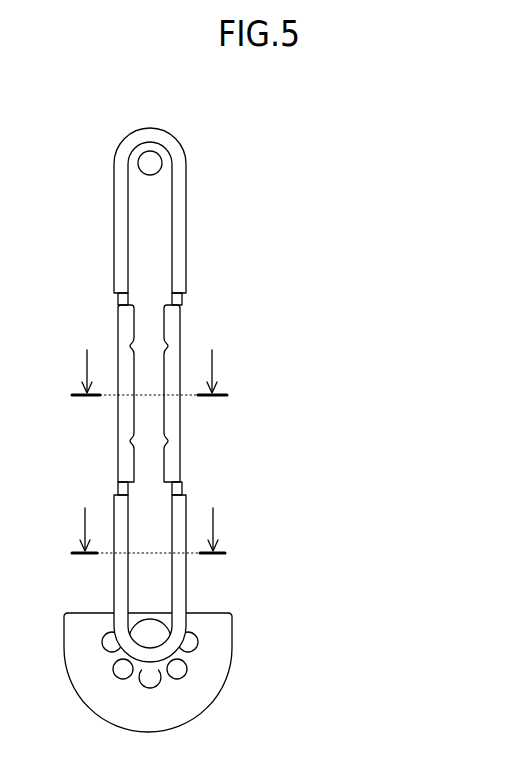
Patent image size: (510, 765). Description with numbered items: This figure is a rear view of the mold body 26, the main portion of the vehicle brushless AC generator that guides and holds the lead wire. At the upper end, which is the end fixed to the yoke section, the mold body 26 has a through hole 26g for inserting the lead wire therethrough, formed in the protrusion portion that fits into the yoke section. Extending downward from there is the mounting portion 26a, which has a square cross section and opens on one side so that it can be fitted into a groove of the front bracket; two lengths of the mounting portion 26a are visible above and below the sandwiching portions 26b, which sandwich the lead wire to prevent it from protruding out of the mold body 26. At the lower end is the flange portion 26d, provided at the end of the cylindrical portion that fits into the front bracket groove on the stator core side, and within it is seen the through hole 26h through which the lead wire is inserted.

The mold body 26 is at (255, 419).
The mounting portion 26a is at (176, 238).
The sandwiching portions 26b is at (173, 333).
The through hole 26g is at (149, 164).
The flange portion 26d is at (215, 638).
The through hole 26h is at (152, 647).